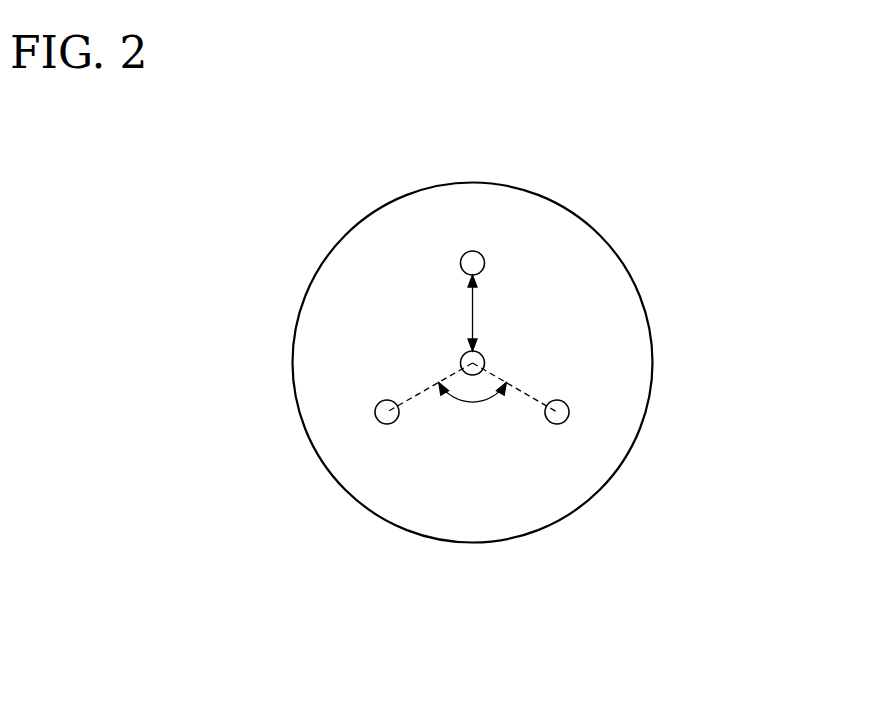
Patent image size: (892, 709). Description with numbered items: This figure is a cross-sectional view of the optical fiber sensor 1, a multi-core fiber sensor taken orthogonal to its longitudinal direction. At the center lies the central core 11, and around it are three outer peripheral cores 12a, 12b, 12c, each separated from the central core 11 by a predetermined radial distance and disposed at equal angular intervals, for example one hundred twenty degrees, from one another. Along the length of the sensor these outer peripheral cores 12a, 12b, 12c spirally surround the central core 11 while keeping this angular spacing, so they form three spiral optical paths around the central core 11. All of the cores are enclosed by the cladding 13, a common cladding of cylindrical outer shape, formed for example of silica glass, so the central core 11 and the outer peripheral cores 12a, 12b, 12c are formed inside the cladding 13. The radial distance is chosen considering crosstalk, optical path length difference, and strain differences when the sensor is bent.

The optical fiber sensor 1 is at (473, 341).
The central core 11 is at (463, 355).
The outer peripheral core 12a is at (472, 251).
The outer peripheral core 12b is at (375, 411).
The outer peripheral core 12c is at (569, 406).
The cladding 13 is at (528, 500).